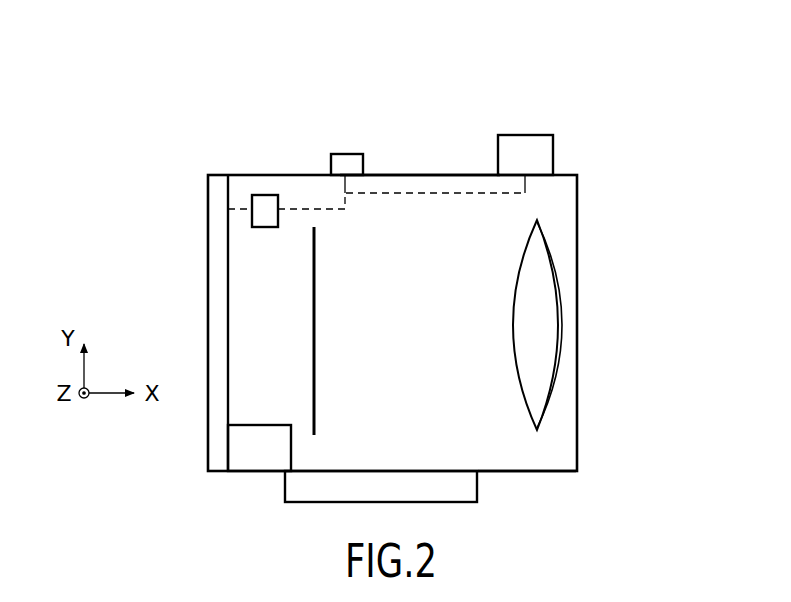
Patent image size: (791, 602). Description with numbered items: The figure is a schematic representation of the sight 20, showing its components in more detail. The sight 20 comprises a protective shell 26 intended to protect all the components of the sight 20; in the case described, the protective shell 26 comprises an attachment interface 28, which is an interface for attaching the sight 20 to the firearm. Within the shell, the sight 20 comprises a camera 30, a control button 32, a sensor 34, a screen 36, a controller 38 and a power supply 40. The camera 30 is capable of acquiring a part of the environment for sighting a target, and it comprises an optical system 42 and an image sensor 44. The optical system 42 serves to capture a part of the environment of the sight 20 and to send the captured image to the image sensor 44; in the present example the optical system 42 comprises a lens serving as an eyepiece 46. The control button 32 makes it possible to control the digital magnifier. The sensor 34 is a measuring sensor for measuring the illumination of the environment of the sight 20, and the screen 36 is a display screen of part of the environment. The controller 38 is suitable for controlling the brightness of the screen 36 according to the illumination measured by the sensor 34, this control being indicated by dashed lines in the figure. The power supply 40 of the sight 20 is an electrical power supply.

The sight 20 is at (571, 128).
The protective shell 26 is at (417, 175).
The attachment interface 28 is at (381, 488).
The camera 30 is at (490, 438).
The control button 32 is at (346, 162).
The sensor 34 is at (527, 148).
The screen 36 is at (216, 328).
The controller 38 is at (263, 195).
The power supply 40 is at (259, 448).
The optical system 42 is at (566, 314).
The image sensor 44 is at (317, 318).
The eyepiece 46 is at (548, 373).